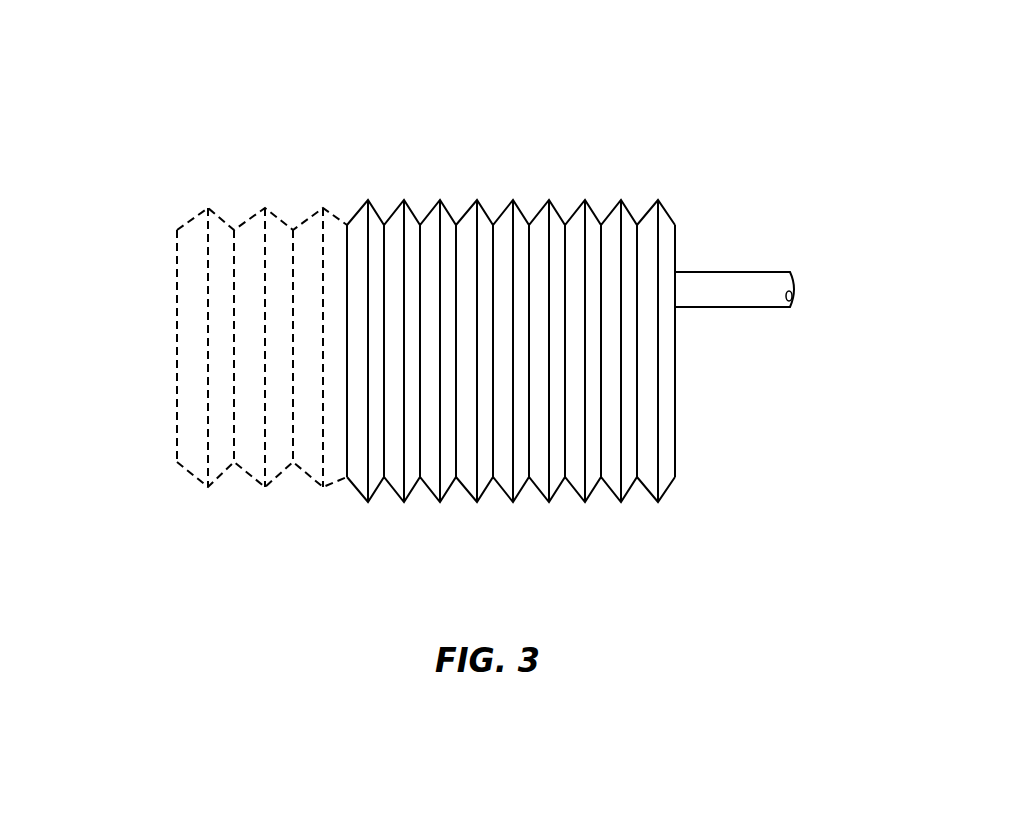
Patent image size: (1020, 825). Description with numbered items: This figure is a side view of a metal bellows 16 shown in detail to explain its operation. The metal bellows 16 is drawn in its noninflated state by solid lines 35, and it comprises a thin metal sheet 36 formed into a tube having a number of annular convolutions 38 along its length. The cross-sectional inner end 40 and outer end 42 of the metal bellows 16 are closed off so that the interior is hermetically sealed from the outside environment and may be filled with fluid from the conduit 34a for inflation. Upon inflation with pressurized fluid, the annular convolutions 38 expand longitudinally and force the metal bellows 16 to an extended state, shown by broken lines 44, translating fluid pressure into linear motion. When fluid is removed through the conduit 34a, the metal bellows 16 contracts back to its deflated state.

The metal bellows 16 is at (672, 158).
The conduit 34a is at (738, 272).
The solid lines 35 is at (675, 512).
The thin metal sheet 36 is at (648, 430).
The annular convolutions 38 is at (477, 200).
The inner end 40 is at (678, 368).
The outer end 42 is at (175, 277).
The broken lines 44 is at (345, 512).